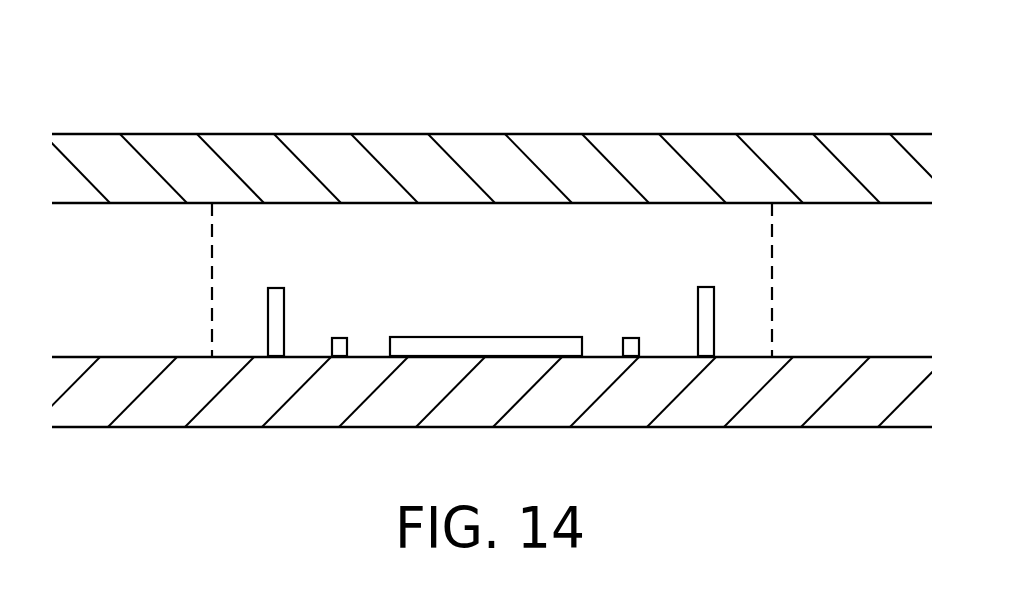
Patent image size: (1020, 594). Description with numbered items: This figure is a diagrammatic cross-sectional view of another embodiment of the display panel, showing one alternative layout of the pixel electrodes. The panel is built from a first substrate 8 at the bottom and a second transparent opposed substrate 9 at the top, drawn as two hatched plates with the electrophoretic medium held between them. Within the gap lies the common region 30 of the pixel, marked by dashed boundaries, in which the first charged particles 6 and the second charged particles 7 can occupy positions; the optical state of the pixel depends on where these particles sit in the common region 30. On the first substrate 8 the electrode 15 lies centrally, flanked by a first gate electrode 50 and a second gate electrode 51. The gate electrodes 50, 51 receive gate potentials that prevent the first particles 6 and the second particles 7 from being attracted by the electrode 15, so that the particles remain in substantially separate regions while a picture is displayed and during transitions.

The second transparent opposed substrate 9 is at (105, 143).
The first substrate 8 is at (105, 425).
The common region 30 is at (210, 240).
The first charged particles 6 is at (278, 288).
The second charged particles 7 is at (706, 287).
The first gate electrode 50 is at (340, 337).
The second gate electrode 51 is at (632, 337).
The electrode 15 is at (497, 348).